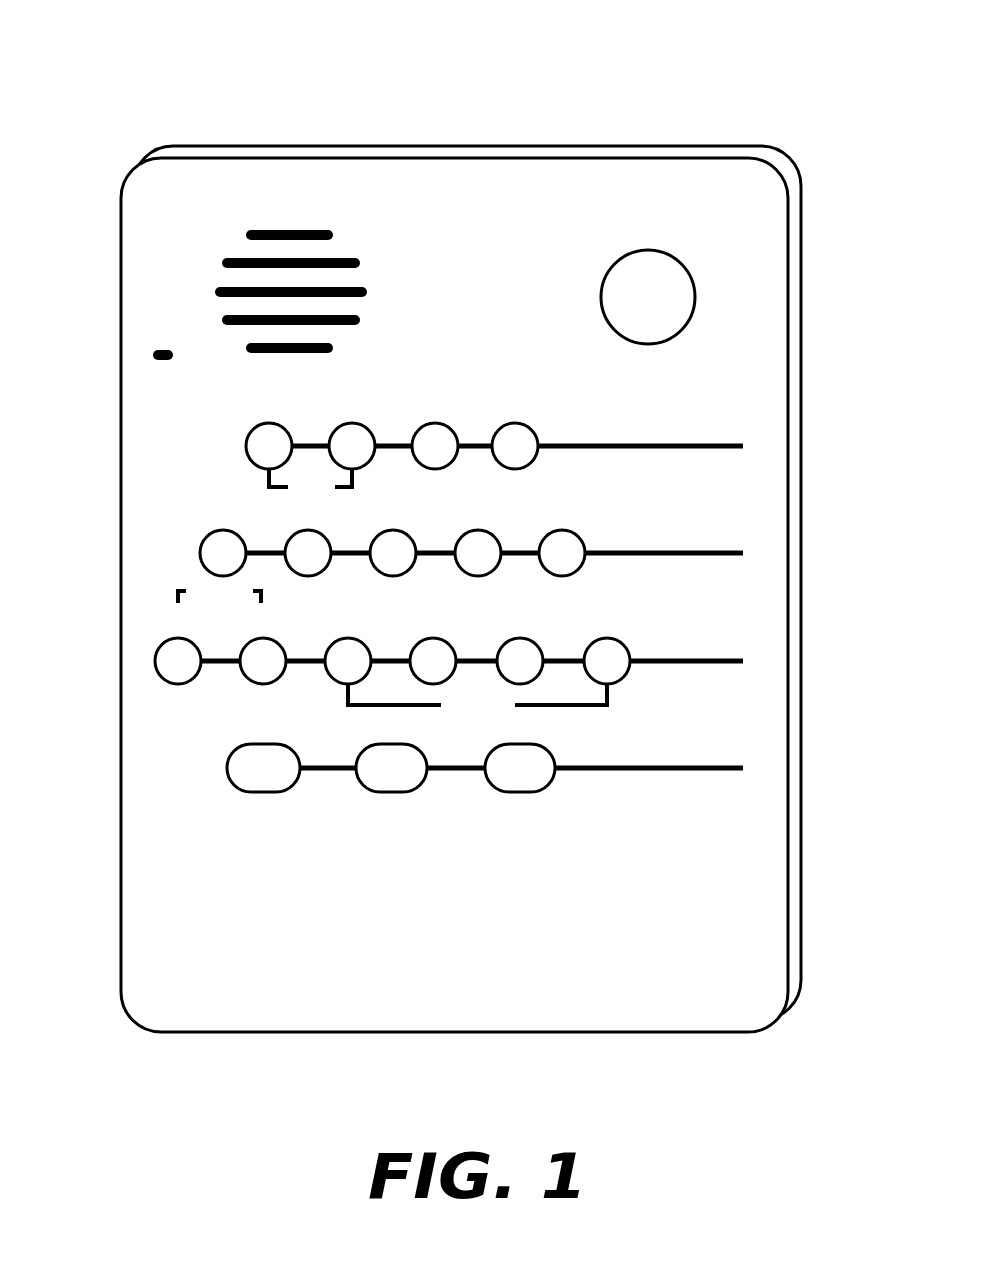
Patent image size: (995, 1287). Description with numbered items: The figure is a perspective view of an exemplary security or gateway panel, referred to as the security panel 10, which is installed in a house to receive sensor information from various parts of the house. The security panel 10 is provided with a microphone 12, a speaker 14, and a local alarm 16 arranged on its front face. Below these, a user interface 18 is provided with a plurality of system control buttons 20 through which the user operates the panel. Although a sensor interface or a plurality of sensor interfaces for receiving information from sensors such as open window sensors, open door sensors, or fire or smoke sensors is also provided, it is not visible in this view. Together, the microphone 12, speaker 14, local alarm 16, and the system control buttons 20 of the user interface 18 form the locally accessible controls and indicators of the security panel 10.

The security panel 10 is at (287, 82).
The microphone 12 is at (152, 352).
The speaker 14 is at (333, 235).
The local alarm 16 is at (648, 252).
The user interface 18 is at (398, 871).
The system control buttons 20 is at (536, 430).